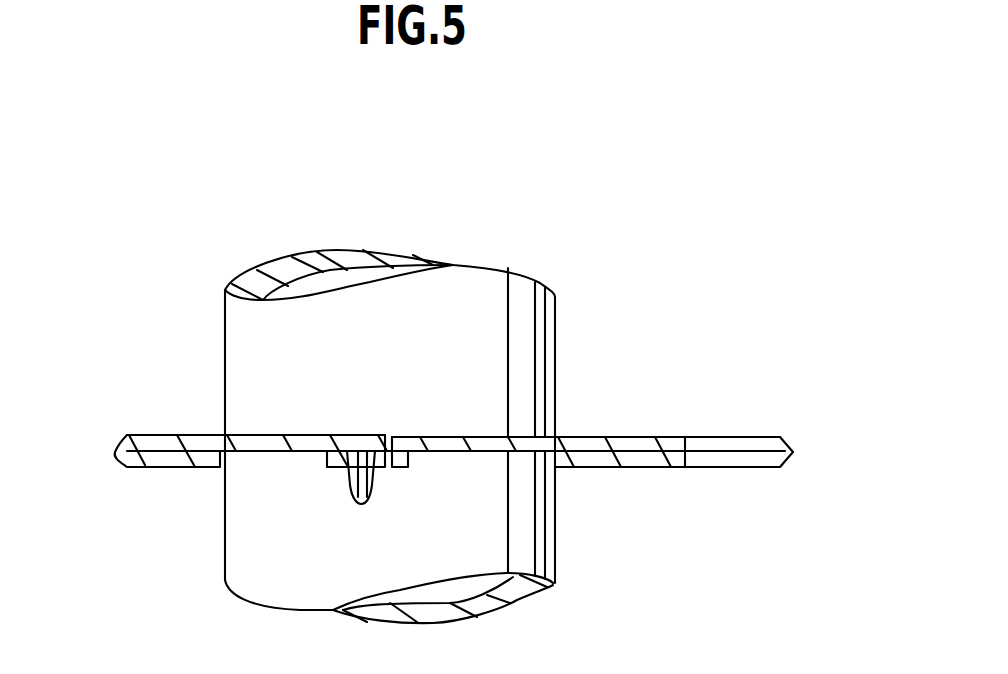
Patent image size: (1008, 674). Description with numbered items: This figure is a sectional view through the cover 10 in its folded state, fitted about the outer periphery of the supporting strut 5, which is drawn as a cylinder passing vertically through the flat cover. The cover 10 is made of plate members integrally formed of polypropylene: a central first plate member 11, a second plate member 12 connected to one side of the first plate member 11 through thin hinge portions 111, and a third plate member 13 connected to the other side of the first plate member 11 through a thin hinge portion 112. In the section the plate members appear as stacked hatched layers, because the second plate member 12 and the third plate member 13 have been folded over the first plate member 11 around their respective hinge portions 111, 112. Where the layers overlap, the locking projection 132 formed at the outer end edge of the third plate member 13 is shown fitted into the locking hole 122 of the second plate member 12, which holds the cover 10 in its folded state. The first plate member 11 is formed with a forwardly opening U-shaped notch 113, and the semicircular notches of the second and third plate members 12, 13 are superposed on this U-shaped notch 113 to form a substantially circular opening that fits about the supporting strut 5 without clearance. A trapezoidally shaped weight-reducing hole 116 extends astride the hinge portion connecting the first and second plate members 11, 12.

The supporting strut 5 is at (542, 330).
The cover 10 is at (688, 398).
The first plate member 11 is at (633, 467).
The hinge portions 111 is at (793, 452).
The hinge portion 112 is at (117, 463).
The U-shaped notch 113 is at (549, 467).
The weight-reducing hole 116 is at (688, 462).
The second plate member 12 is at (597, 437).
The locking hole 122 is at (377, 468).
The third plate member 13 is at (287, 435).
The locking projection 132 is at (363, 507).